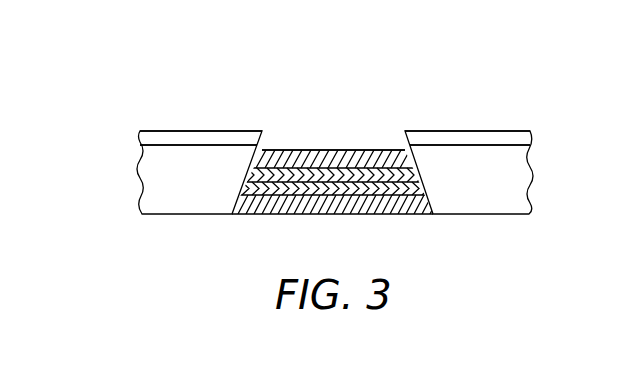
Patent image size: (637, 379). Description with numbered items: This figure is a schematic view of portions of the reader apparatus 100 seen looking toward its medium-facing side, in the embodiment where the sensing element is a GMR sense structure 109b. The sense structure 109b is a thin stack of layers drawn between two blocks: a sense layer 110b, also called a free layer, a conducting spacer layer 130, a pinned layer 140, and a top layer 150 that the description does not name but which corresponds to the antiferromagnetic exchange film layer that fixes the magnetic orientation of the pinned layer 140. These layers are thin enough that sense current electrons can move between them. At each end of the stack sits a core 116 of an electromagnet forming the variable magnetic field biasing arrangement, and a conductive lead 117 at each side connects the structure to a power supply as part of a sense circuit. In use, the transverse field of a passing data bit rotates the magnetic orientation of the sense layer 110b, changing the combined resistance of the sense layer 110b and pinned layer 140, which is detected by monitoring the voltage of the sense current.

The reader apparatus 100 is at (116, 197).
The GMR sense structure 109b is at (328, 138).
The sense layer 110b is at (295, 214).
The core 116 is at (335, 172).
The conductive lead 117 is at (169, 136).
The conducting spacer layer 130 is at (363, 200).
The pinned layer 140 is at (381, 151).
The top conductive layer 150 is at (282, 151).